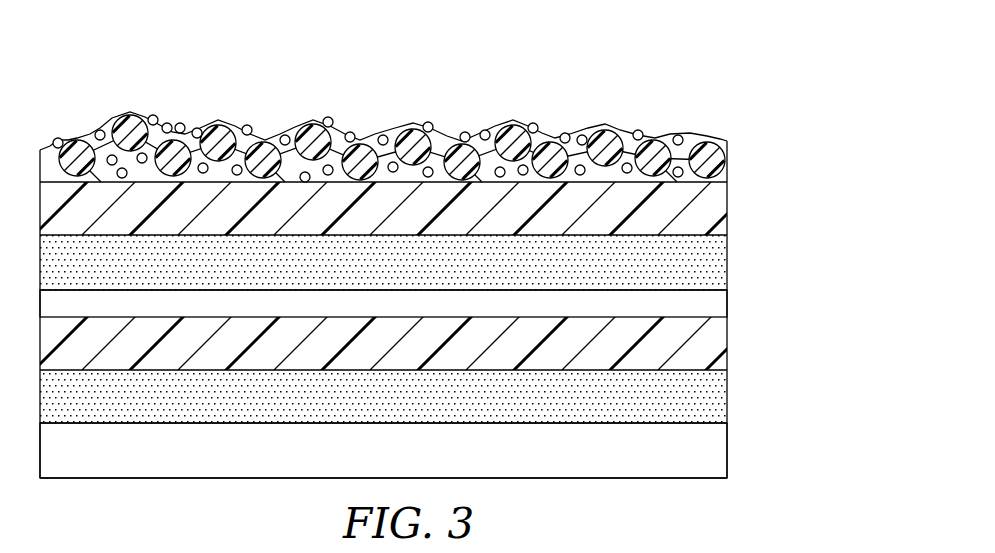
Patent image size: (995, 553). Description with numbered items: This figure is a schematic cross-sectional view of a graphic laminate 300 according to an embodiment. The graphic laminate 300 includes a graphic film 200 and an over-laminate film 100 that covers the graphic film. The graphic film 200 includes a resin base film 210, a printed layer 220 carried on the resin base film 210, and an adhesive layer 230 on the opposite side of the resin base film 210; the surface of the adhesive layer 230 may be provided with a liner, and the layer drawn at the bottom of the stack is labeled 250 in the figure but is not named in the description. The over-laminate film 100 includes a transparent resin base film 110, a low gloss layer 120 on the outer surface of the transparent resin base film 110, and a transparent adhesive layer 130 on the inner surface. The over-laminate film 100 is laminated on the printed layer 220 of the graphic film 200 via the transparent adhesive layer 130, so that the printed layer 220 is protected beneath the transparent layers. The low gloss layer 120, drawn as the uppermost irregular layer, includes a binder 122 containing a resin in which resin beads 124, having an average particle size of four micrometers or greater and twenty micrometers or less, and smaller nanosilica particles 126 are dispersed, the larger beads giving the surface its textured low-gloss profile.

The graphic laminate 300 is at (666, 51).
The over-laminate film 100 is at (448, 170).
The low gloss layer 120 is at (419, 117).
The binder 122 is at (658, 142).
The resin beads 124 is at (140, 112).
The nanosilica particles 126 is at (430, 122).
The transparent resin base film 110 is at (698, 215).
The transparent adhesive layer 130 is at (423, 261).
The graphic film 200 is at (448, 378).
The printed layer 220 is at (699, 306).
The resin base film 210 is at (699, 353).
The adhesive layer 230 is at (699, 396).
The bottom layer 250 is at (699, 448).